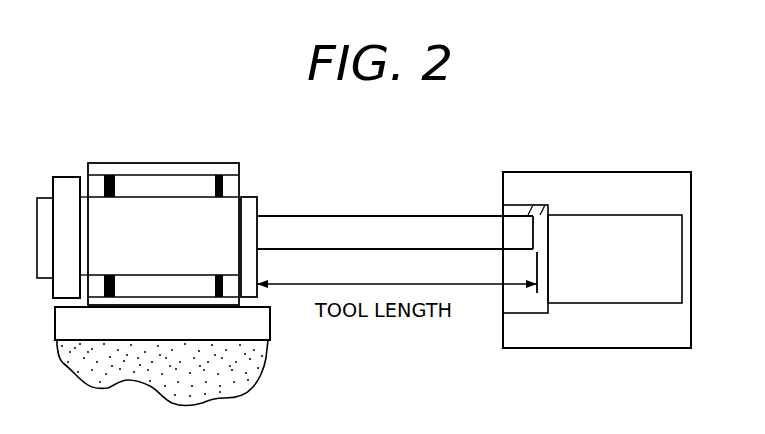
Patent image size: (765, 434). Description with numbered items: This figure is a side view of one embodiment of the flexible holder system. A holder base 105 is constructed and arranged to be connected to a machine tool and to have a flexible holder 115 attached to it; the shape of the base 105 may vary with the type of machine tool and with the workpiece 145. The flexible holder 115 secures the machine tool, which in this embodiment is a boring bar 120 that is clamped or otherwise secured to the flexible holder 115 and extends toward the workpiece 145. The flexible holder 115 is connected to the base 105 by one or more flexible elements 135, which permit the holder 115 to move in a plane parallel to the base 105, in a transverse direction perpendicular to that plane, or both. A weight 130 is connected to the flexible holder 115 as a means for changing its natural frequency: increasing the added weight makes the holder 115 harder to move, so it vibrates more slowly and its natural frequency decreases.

The holder base 105 is at (160, 162).
The flexible holder 115 is at (257, 205).
The boring bar 120 is at (393, 216).
The weight 130 is at (65, 176).
The flexible elements 135 is at (241, 181).
The workpiece 145 is at (632, 175).